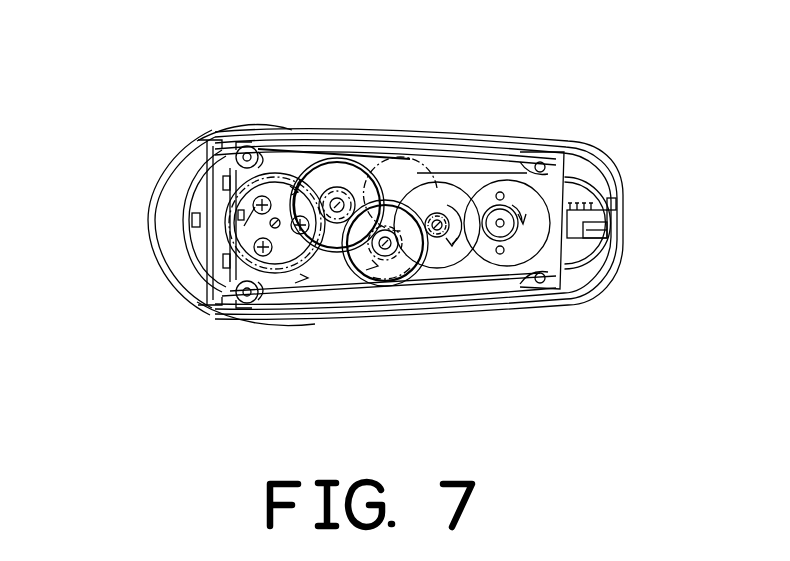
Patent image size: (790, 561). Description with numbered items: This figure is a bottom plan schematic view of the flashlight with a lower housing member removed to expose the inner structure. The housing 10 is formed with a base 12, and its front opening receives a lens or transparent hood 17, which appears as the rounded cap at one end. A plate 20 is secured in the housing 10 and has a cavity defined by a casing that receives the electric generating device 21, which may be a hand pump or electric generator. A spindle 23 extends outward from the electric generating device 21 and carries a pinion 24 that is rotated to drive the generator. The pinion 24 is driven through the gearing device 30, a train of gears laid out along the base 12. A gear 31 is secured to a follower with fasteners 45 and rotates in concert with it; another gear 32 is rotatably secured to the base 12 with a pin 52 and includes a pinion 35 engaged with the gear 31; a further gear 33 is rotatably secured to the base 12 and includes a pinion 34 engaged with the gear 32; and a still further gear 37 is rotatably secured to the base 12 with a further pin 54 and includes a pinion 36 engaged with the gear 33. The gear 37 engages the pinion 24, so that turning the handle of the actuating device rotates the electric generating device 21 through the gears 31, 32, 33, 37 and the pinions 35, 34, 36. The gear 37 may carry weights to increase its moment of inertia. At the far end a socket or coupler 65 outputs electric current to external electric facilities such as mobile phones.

The housing 10 is at (163, 132).
The base 12 is at (303, 302).
The hood 17 is at (165, 233).
The plate 20 is at (551, 163).
The electric generating device 21 is at (508, 179).
The spindle 23 is at (515, 239).
The pinion 24 is at (505, 250).
The gearing device 30 is at (305, 280).
The gear 31 is at (268, 173).
The gear 32 is at (337, 188).
The gear 33 is at (383, 286).
The pinion 34 is at (352, 320).
The pinion 35 is at (322, 188).
The pinion 36 is at (402, 262).
The gear 37 is at (442, 190).
The fasteners 45 is at (250, 192).
The pin 52 is at (341, 190).
The pin 54 is at (443, 235).
The coupler 65 is at (623, 208).